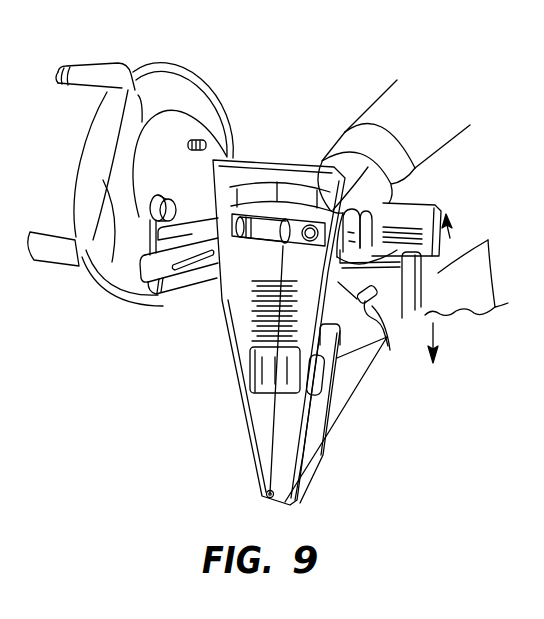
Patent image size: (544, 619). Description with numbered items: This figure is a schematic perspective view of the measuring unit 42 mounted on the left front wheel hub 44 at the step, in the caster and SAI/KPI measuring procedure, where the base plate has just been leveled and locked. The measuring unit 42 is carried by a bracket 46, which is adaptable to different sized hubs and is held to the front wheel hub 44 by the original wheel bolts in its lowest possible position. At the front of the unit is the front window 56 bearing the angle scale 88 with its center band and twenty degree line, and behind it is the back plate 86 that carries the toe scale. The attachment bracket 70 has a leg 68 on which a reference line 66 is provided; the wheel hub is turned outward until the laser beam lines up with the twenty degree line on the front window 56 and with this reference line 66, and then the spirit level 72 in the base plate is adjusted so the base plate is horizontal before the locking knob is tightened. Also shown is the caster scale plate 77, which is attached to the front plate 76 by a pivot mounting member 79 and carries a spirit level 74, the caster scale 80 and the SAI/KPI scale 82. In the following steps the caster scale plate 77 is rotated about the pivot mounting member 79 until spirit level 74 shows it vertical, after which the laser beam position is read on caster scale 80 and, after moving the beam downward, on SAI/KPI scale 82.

The measuring unit 42 is at (200, 376).
The front wheel hub 44 is at (196, 118).
The bracket 46 is at (160, 298).
The front window 56 is at (314, 458).
The reference line 66 is at (428, 277).
The leg 68 is at (441, 209).
The attachment bracket 70 is at (378, 259).
The spirit level 72 is at (384, 340).
The spirit level 74 is at (244, 243).
The front plate 76 is at (333, 427).
The caster scale plate 77 is at (230, 337).
The pivot mounting member 79 is at (267, 494).
The caster scale 80 is at (247, 183).
The SAI/KPI scale 82 is at (284, 290).
The back plate 86 is at (450, 213).
The angle scale 88 is at (245, 382).